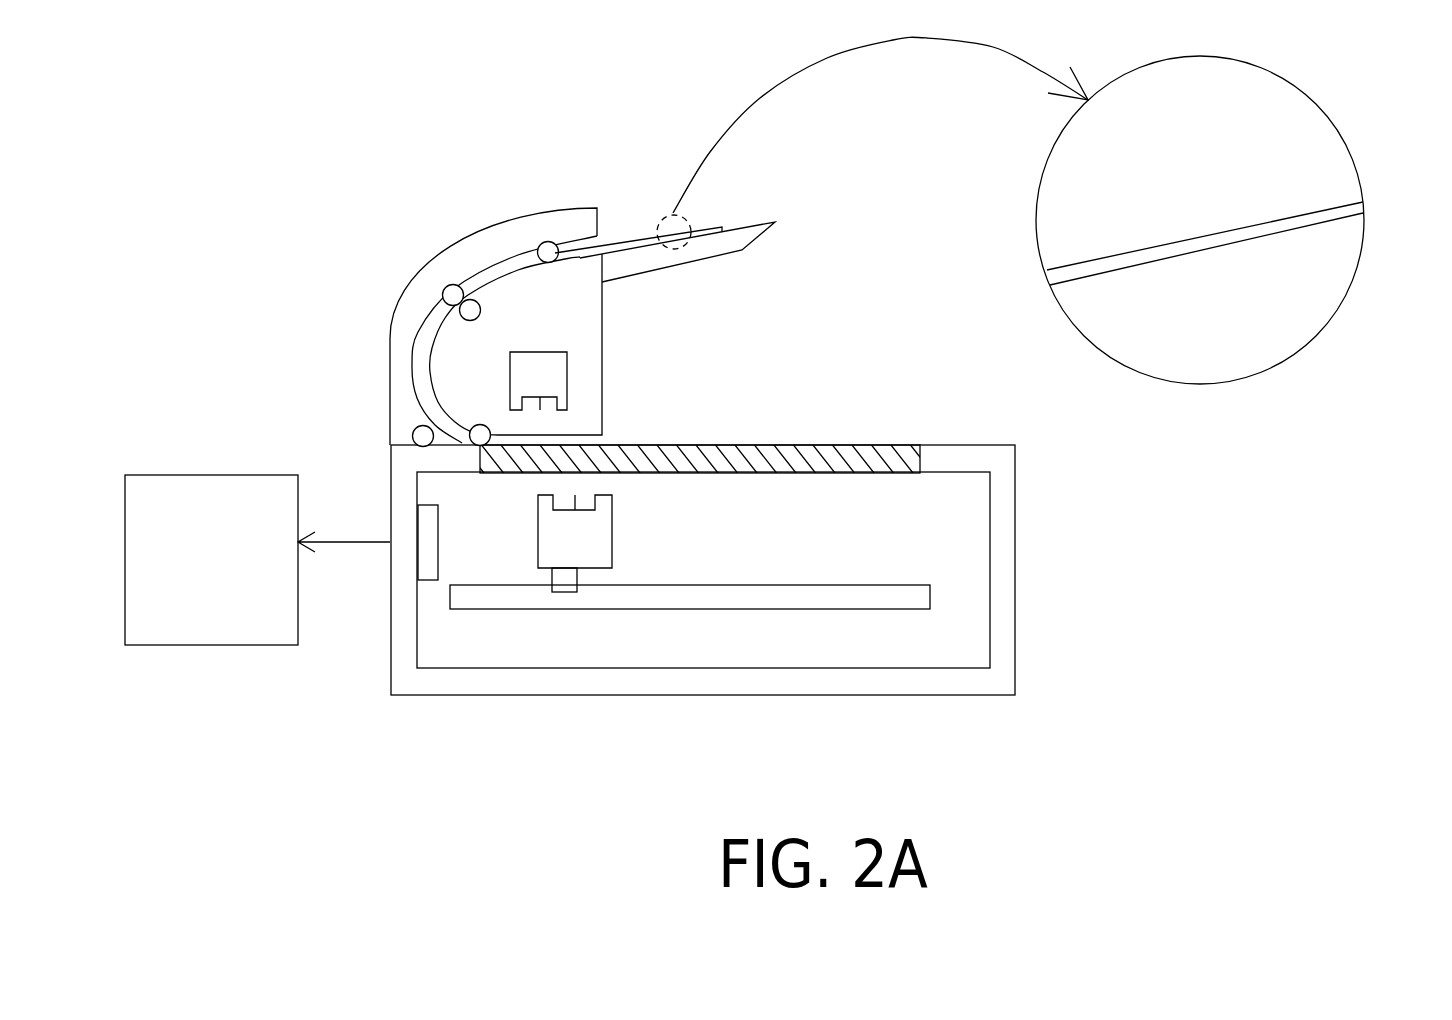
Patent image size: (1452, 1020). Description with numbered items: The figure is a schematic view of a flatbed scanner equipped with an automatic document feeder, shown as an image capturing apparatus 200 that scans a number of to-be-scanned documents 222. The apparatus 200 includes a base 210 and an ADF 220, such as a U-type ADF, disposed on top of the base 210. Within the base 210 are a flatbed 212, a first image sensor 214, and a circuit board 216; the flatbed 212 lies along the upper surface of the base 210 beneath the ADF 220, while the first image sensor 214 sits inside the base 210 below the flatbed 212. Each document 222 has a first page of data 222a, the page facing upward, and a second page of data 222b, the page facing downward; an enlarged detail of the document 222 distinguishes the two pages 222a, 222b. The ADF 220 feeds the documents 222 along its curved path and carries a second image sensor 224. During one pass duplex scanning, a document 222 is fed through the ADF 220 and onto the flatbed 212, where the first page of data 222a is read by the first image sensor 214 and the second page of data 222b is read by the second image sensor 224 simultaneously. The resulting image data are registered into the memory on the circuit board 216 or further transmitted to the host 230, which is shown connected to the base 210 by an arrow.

The image capturing apparatus 200 is at (690, 817).
The base 210 is at (998, 602).
The flatbed 212 is at (897, 442).
The first image sensor 214 is at (593, 542).
The circuit board 216 is at (430, 563).
The ADF 220 is at (590, 335).
The to-be-scanned document 222 is at (989, 211).
The first page of data 222a is at (1130, 252).
The second page of data 222b is at (1237, 242).
The second image sensor 224 is at (525, 373).
The host 230 is at (193, 503).